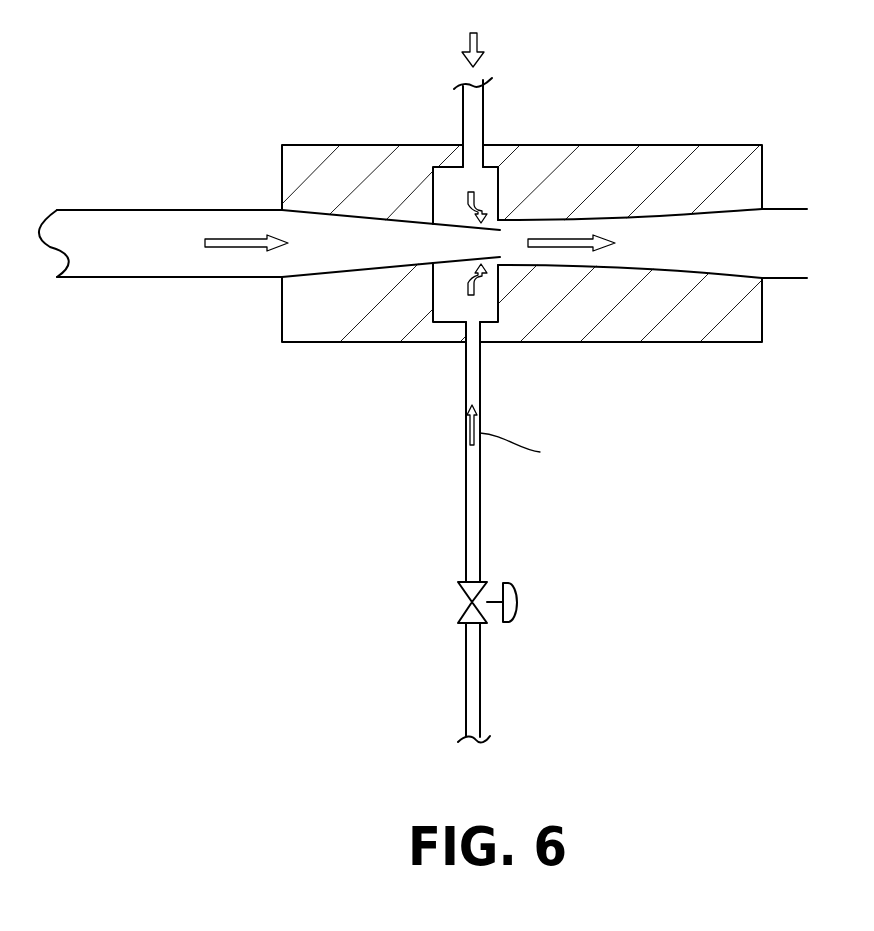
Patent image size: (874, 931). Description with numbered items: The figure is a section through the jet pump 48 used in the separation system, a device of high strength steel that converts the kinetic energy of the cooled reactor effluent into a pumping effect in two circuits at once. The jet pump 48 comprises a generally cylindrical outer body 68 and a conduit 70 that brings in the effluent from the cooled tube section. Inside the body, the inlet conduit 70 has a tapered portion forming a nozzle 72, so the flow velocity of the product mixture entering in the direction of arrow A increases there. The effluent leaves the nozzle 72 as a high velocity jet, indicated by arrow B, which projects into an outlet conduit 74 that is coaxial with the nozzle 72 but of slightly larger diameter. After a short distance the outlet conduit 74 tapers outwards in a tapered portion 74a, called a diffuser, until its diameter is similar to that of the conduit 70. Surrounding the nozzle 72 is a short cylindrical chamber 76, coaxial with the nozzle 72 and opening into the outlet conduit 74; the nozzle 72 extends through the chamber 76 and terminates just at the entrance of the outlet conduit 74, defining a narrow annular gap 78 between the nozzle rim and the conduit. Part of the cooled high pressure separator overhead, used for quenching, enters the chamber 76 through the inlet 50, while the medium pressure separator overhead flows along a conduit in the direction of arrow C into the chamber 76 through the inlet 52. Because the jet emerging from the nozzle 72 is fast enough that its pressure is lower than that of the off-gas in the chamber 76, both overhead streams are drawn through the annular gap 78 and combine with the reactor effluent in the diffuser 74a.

The jet pump 48 is at (295, 372).
The inlet 50 is at (478, 83).
The inlet 52 is at (468, 317).
The outer body 68 is at (760, 145).
The conduit 70 is at (132, 210).
The nozzle 72 is at (787, 280).
The outlet conduit 74 is at (420, 223).
The tapered portion (diffuser) 74a is at (682, 217).
The cylindrical chamber 76 is at (487, 305).
The annular gap 78 is at (500, 262).